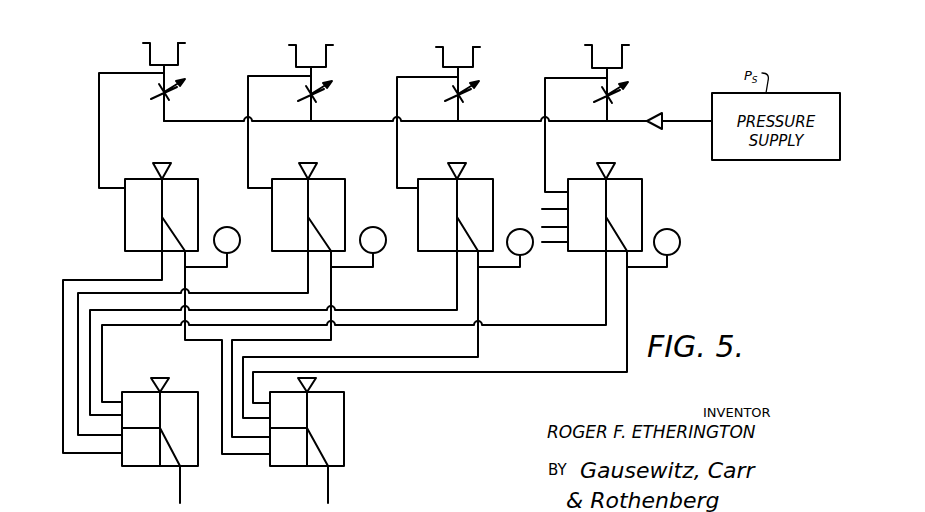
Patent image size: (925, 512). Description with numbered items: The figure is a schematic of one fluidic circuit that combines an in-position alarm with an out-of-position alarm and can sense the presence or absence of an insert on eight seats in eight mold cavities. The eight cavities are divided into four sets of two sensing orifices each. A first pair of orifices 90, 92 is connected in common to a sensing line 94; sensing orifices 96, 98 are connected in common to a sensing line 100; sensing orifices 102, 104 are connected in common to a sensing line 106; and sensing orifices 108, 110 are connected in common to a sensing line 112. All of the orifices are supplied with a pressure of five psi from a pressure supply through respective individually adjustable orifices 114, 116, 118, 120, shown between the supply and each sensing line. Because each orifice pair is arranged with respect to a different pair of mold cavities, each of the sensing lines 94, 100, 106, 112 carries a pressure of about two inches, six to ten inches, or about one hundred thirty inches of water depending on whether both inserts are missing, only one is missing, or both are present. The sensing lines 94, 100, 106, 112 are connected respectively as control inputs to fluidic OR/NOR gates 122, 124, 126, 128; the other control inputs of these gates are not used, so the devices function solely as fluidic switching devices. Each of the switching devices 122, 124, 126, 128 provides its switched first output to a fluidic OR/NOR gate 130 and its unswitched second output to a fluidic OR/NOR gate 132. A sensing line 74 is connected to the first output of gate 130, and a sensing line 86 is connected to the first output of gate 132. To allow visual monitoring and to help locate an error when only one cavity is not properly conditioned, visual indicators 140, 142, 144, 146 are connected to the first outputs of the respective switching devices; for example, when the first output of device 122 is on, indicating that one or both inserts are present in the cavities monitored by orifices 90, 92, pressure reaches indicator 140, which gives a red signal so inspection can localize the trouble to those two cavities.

The sensing line 74 is at (328, 498).
The sensing line 86 is at (180, 498).
The sensing orifice 90 is at (585, 43).
The sensing orifice 92 is at (627, 43).
The sensing line 94 is at (551, 77).
The sensing orifice 96 is at (437, 43).
The sensing orifice 98 is at (479, 43).
The sensing line 100 is at (408, 59).
The sensing orifice 102 is at (288, 43).
The sensing orifice 104 is at (330, 43).
The sensing line 106 is at (260, 74).
The sensing orifice 108 is at (143, 43).
The sensing orifice 110 is at (185, 43).
The sensing line 112 is at (99, 73).
The adjustable orifice 114 is at (620, 96).
The adjustable orifice 116 is at (472, 96).
The adjustable orifice 118 is at (325, 96).
The adjustable orifice 120 is at (171, 96).
The fluidic OR/NOR gate 122 is at (645, 185).
The fluidic OR/NOR gate 124 is at (490, 185).
The fluidic OR/NOR gate 126 is at (345, 185).
The fluidic OR/NOR gate 128 is at (198, 185).
The fluidic OR/NOR gate 130 is at (344, 405).
The fluidic OR/NOR gate 132 is at (190, 391).
The visual indicator 140 is at (674, 229).
The visual indicator 142 is at (534, 210).
The visual indicator 144 is at (388, 210).
The visual indicator 146 is at (244, 210).